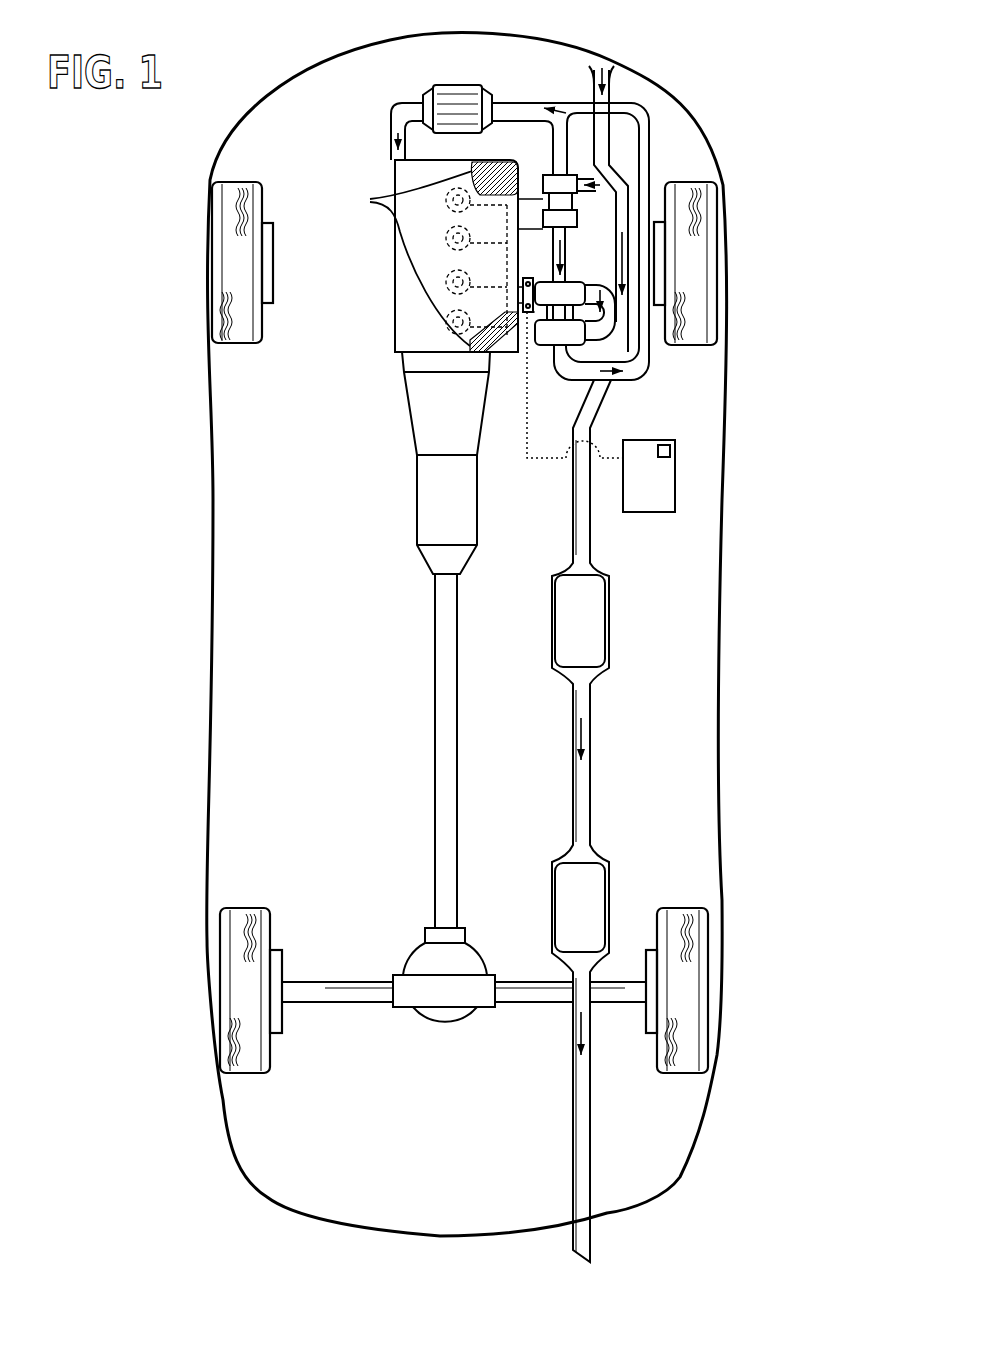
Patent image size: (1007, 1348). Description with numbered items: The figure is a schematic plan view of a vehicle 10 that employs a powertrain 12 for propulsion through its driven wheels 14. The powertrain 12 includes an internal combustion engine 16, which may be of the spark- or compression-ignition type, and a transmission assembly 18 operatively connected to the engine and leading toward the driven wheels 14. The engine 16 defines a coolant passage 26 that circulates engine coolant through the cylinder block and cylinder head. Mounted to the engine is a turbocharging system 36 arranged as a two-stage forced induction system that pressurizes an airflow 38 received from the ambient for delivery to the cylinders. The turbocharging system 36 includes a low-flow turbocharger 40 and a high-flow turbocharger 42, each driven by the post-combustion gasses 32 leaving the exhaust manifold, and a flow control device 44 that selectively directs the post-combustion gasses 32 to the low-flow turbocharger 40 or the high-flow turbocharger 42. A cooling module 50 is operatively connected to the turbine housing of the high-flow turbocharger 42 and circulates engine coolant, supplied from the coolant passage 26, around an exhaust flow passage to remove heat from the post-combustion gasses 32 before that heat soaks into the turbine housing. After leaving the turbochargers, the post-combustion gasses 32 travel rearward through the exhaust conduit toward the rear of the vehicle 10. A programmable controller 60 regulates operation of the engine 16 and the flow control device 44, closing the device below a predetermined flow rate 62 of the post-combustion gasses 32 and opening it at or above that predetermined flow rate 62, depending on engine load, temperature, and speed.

The vehicle 10 is at (463, 634).
The powertrain 12 is at (463, 591).
The driven wheels 14 is at (243, 997).
The internal combustion engine 16 is at (436, 256).
The transmission assembly 18 is at (461, 534).
The coolant passage 26 is at (340, 280).
The post-combustion gasses 32 is at (566, 258).
The turbocharging system 36 is at (588, 633).
The airflow 38 is at (557, 103).
The low-flow turbocharger 40 is at (548, 170).
The high-flow turbocharger 42 is at (545, 350).
The flow control device 44 is at (533, 277).
The cooling module 50 is at (532, 320).
The programmable controller 60 is at (646, 412).
The predetermined flow rate 62 is at (672, 450).